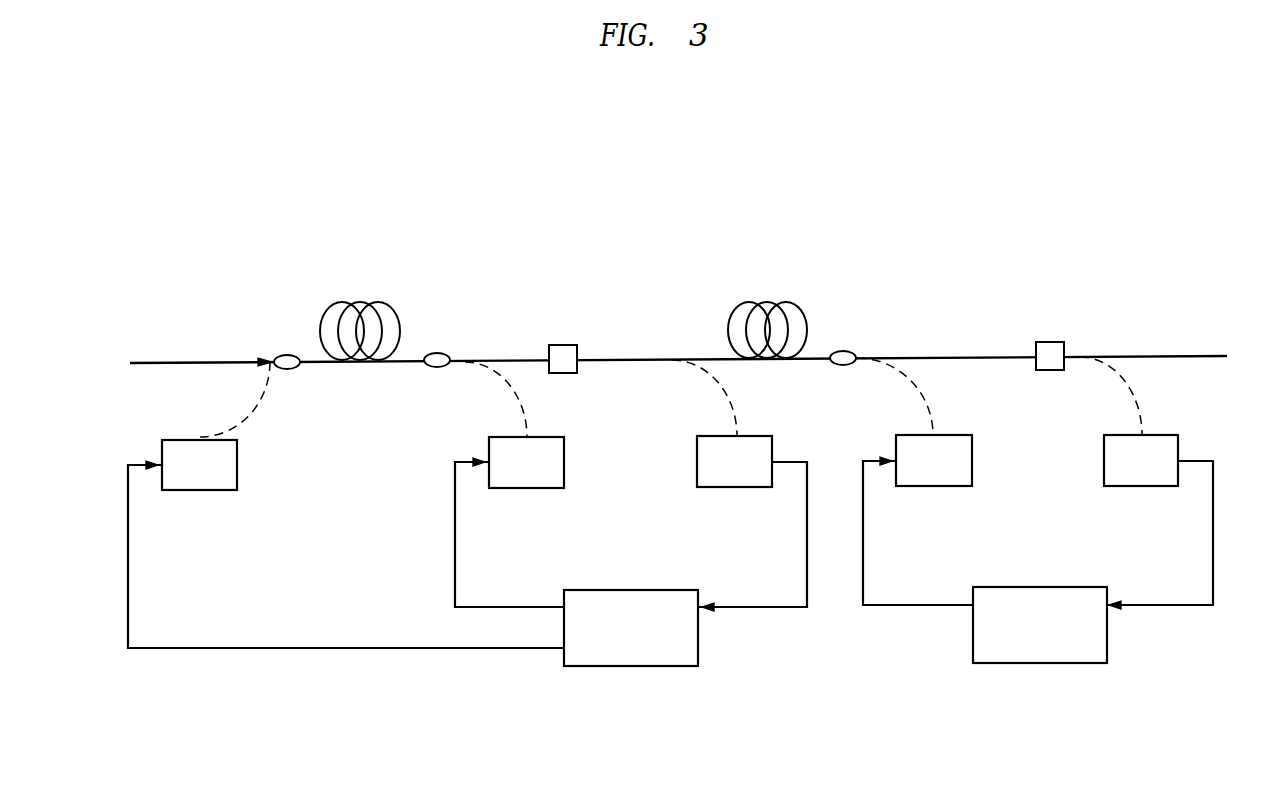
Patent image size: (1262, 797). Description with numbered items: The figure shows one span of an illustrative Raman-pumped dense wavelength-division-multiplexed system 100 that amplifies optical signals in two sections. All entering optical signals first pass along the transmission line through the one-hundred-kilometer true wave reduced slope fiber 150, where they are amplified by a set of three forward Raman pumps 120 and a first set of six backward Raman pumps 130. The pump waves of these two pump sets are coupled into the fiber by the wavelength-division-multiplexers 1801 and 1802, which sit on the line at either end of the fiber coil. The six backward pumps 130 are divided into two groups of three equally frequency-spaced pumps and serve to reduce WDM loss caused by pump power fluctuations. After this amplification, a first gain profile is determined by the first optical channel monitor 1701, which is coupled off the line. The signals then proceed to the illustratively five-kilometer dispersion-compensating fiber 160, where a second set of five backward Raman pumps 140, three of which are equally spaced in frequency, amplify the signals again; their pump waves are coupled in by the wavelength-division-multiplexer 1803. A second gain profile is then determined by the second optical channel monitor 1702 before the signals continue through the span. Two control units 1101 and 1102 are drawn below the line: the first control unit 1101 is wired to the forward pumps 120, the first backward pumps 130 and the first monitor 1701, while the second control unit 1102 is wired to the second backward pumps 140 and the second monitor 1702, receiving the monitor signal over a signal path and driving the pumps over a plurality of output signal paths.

The Raman-pumped DWDM system 100 is at (343, 757).
The first control unit 1101 is at (645, 590).
The second control unit 1102 is at (1055, 587).
The forward Raman pumps 120 is at (237, 440).
The first set of backward Raman pumps 130 is at (564, 437).
The second set of backward Raman pumps 140 is at (972, 435).
The true wave reduced slope fiber 150 is at (391, 306).
The dispersion-compensating fiber 160 is at (800, 304).
The first optical channel monitor 1701 is at (772, 436).
The second optical channel monitor 1702 is at (1178, 435).
The first wavelength-division-multiplexer 1801 is at (285, 355).
The second wavelength-division-multiplexer 1802 is at (443, 353).
The third wavelength-division-multiplexer 1803 is at (849, 351).